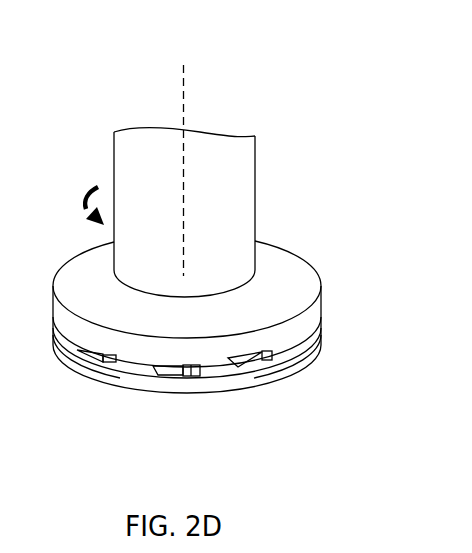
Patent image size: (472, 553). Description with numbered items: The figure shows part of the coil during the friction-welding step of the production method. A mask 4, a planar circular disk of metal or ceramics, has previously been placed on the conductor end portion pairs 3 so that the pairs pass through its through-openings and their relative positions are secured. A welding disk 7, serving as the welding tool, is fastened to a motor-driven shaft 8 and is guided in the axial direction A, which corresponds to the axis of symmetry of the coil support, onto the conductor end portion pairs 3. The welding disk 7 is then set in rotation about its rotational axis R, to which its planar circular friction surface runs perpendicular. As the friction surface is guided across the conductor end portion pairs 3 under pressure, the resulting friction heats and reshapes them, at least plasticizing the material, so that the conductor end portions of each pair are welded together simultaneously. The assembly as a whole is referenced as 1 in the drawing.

The adjustable blade unit / device 1 is at (340, 324).
The conductor end portion pairs 3 is at (98, 363).
The mask 4 is at (246, 386).
The welding disk 7 is at (96, 295).
The motor-driven shaft 8 is at (222, 213).
The axial direction A is at (183, 166).
The rotational axis R is at (94, 206).